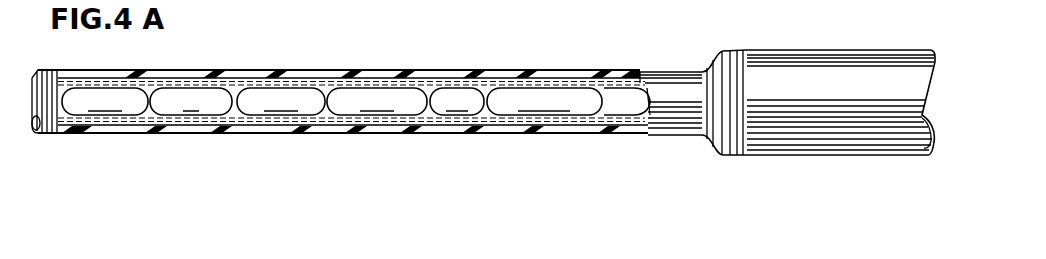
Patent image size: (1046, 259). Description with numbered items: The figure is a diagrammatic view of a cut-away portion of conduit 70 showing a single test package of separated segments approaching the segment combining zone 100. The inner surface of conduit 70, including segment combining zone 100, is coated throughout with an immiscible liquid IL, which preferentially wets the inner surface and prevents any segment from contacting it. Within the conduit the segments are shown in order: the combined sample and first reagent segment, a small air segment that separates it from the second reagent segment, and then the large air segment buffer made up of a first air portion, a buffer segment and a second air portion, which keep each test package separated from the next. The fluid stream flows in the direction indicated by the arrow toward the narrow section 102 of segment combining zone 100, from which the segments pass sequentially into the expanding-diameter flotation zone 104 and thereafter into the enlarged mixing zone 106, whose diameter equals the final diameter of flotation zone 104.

The conduit 70 is at (50, 70).
The immiscible liquid IL is at (320, 133).
The segment combining zone 100 is at (562, 158).
The narrow section 102 is at (655, 70).
The flotation zone 104 is at (722, 52).
The mixing zone 106 is at (837, 50).